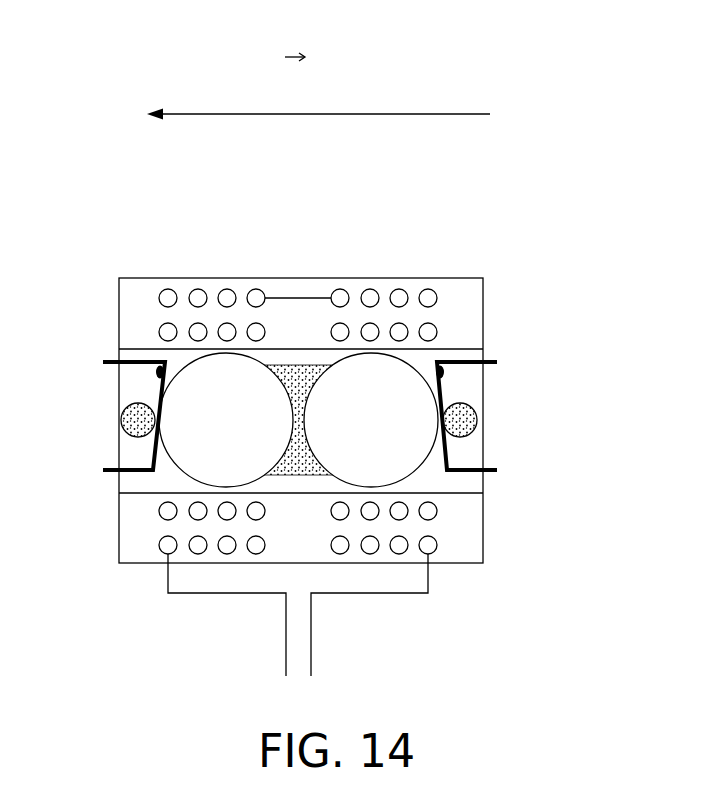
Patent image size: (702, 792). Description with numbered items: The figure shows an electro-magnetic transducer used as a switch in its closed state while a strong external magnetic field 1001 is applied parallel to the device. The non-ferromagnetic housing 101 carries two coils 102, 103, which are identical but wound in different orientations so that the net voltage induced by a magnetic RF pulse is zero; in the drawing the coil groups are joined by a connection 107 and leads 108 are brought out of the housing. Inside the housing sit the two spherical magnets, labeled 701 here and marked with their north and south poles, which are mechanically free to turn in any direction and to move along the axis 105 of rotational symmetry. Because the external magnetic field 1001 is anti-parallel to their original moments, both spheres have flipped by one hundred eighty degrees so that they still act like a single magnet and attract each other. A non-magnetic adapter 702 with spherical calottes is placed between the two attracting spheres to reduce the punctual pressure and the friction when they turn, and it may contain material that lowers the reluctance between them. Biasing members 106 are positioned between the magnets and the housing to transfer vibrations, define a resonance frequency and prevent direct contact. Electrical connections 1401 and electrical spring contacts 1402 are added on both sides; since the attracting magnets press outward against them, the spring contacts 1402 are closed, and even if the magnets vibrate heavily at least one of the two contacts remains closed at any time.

The external magnetic field 1001 is at (447, 113).
The housing 101 is at (125, 278).
The coil 102 is at (160, 298).
The coil 103 is at (437, 298).
The coil connection 107 is at (308, 296).
The magnet 701 is at (247, 387).
The non-magnetic adapter 702 is at (293, 476).
The electrical connections 1401 is at (108, 360).
The electrical spring contacts 1402 is at (156, 372).
The axis of rotational symmetry 105 is at (120, 420).
The biasing members 106 is at (133, 436).
The lead wire 108 is at (286, 652).